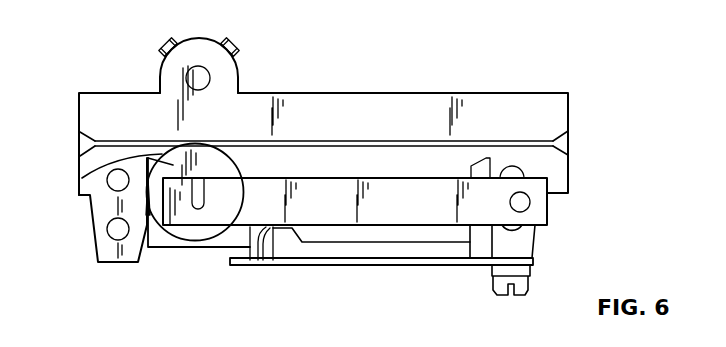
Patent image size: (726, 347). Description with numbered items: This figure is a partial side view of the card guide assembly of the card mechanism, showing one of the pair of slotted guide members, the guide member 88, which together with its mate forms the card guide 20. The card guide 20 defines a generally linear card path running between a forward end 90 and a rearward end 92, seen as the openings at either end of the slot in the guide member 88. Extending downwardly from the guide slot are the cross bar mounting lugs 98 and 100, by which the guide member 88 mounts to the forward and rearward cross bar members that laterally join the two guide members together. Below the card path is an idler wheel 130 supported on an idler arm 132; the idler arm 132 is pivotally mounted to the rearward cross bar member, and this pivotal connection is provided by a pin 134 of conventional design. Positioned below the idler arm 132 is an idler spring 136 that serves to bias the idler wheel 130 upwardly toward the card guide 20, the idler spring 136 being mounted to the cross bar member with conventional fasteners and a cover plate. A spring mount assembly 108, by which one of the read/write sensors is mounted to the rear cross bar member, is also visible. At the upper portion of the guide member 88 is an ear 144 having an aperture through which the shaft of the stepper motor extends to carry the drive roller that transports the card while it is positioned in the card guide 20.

The card guide 20 is at (398, 137).
The guide member 88 is at (505, 97).
The forward end 90 is at (92, 144).
The rearward end 92 is at (568, 141).
The cross bar mounting lug 98 is at (97, 245).
The cross bar mounting lug 100 is at (528, 241).
The spring mount assembly 108 is at (500, 291).
The idler wheel 130 is at (82, 178).
The idler arm 132 is at (547, 208).
The pin 134 is at (193, 217).
The idler spring 136 is at (355, 268).
The ear 144 is at (233, 75).